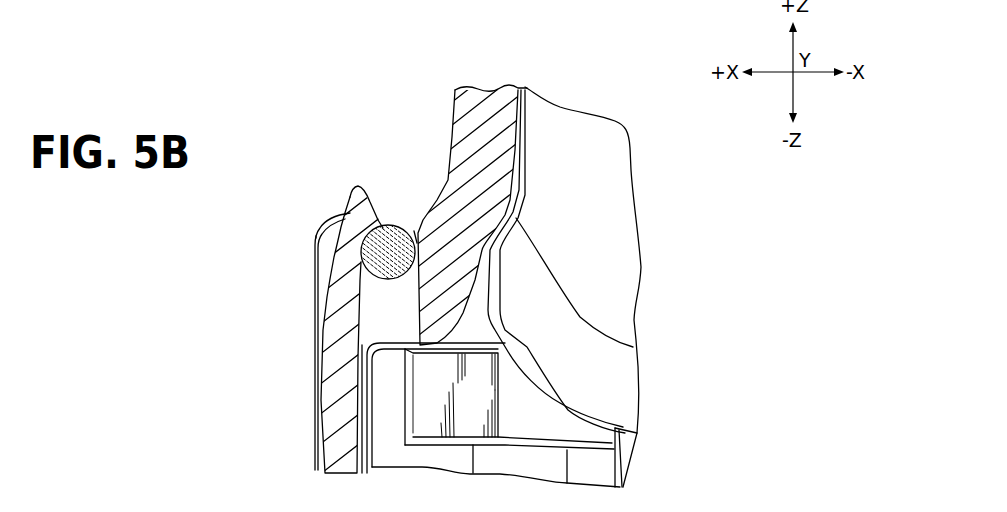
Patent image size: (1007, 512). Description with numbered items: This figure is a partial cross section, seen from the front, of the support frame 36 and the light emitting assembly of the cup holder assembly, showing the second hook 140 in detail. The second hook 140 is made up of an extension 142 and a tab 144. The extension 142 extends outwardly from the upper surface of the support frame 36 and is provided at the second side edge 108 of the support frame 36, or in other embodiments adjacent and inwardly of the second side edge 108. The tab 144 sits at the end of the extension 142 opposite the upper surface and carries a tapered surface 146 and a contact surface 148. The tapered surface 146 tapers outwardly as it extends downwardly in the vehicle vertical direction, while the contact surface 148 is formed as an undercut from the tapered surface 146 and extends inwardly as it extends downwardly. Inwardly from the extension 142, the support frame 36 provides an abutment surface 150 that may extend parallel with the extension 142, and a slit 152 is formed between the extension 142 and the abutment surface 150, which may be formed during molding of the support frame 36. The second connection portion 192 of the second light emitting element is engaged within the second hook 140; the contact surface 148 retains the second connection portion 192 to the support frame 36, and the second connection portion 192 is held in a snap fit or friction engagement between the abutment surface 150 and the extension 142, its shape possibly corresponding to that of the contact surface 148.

The support frame 36 is at (646, 98).
The second side edge 108 is at (318, 313).
The second hook 140 is at (318, 193).
The extension 142 is at (335, 274).
The tab 144 is at (350, 213).
The tapered surface 146 is at (369, 187).
The contact surface 148 is at (391, 226).
The abutment surface 150 is at (418, 317).
The slit 152 is at (335, 335).
The second connection portion 192 is at (408, 228).